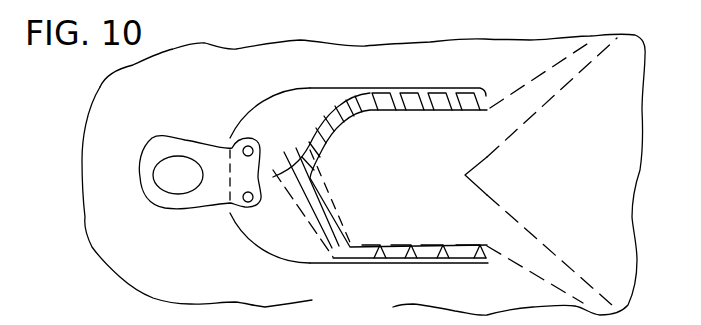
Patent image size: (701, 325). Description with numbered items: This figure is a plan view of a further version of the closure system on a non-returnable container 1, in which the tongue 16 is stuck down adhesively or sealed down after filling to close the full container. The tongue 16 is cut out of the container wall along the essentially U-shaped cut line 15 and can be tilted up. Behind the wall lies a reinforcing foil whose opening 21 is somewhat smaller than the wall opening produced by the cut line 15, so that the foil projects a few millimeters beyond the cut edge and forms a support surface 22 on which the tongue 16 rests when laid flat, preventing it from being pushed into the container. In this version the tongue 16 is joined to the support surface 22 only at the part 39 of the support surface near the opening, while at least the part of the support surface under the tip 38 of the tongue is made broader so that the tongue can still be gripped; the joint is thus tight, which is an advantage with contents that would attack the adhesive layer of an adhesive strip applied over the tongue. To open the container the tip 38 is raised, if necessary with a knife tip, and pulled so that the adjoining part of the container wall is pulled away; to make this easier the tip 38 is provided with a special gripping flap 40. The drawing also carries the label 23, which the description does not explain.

The non-returnable container 1 is at (500, 54).
The cut line 15 is at (370, 265).
The tongue 16 is at (330, 296).
The opening in the reinforcing foil 21 is at (398, 217).
The support surface 22 is at (305, 106).
The removable tear panel 23 is at (510, 158).
The tip of the tongue 38 is at (260, 222).
The part of the support surface near the opening 39 is at (403, 93).
The flap 40 is at (157, 147).